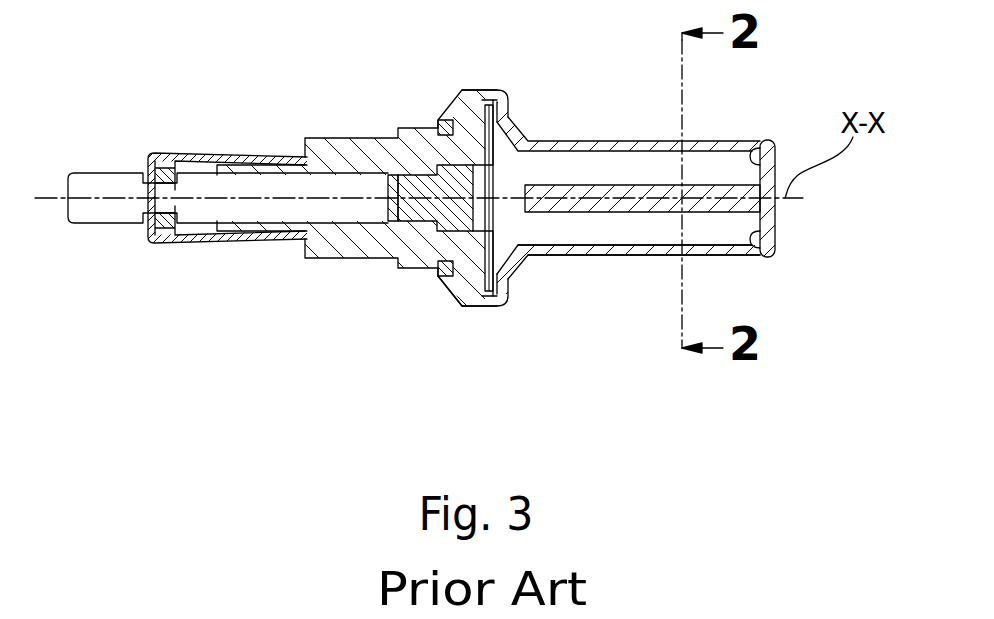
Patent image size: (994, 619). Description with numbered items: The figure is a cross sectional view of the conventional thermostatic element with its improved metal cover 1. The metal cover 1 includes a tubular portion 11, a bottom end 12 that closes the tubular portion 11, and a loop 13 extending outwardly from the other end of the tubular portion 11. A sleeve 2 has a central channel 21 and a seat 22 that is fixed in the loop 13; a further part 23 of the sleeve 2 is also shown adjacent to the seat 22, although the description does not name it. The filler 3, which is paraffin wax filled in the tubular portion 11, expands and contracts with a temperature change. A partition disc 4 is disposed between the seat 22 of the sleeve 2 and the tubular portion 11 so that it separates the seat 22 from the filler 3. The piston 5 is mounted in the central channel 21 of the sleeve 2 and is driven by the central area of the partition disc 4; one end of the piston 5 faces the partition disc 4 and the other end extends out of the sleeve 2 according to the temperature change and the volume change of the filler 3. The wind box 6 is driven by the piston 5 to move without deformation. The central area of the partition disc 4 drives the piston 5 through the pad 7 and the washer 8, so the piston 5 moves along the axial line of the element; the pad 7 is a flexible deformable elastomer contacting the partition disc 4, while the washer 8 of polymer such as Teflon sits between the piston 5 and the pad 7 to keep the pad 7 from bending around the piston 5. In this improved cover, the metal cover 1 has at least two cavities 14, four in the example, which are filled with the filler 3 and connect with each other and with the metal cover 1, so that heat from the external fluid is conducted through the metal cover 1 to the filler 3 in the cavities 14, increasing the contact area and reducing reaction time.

The metal cover 1 is at (650, 125).
The sleeve 2 is at (371, 128).
The filler 3 is at (708, 155).
The partition disc 4 is at (480, 195).
The piston 5 is at (202, 208).
The wind box 6 is at (183, 153).
The pad 7 is at (425, 213).
The washer 8 is at (390, 193).
The tubular portion 11 is at (613, 257).
The bottom end 12 is at (775, 213).
The loop 13 is at (478, 308).
The cavities 14 is at (762, 150).
The central channel 21 is at (313, 177).
The seat 22 is at (486, 101).
The plate 23 is at (508, 113).